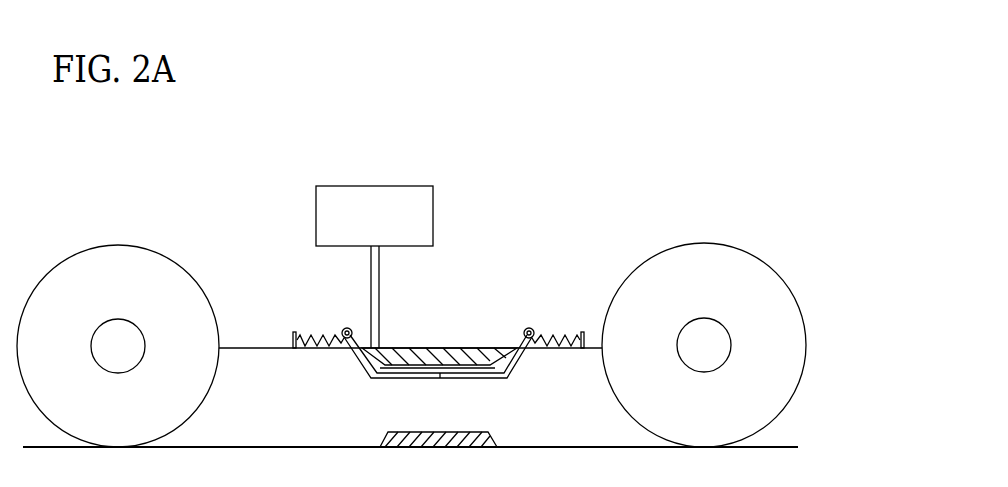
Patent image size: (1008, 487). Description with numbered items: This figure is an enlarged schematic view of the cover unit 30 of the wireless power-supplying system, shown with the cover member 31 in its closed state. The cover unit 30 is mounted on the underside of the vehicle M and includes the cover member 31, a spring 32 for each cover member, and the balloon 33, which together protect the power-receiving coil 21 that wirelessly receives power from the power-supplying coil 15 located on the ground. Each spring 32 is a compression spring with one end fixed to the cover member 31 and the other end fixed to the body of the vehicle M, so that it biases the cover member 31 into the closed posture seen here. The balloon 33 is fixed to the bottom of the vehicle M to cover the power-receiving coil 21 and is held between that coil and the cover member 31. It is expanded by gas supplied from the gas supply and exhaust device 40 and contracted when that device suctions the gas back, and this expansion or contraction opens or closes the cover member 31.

The power-supplying coil 15 is at (494, 432).
The power-receiving coil 21 is at (478, 350).
The cover unit 30 is at (422, 349).
The cover member 31 is at (376, 376).
The spring 32 is at (316, 334).
The balloon 33 is at (418, 366).
The gas supply and exhaust device 40 is at (413, 186).
The vehicle M is at (250, 349).